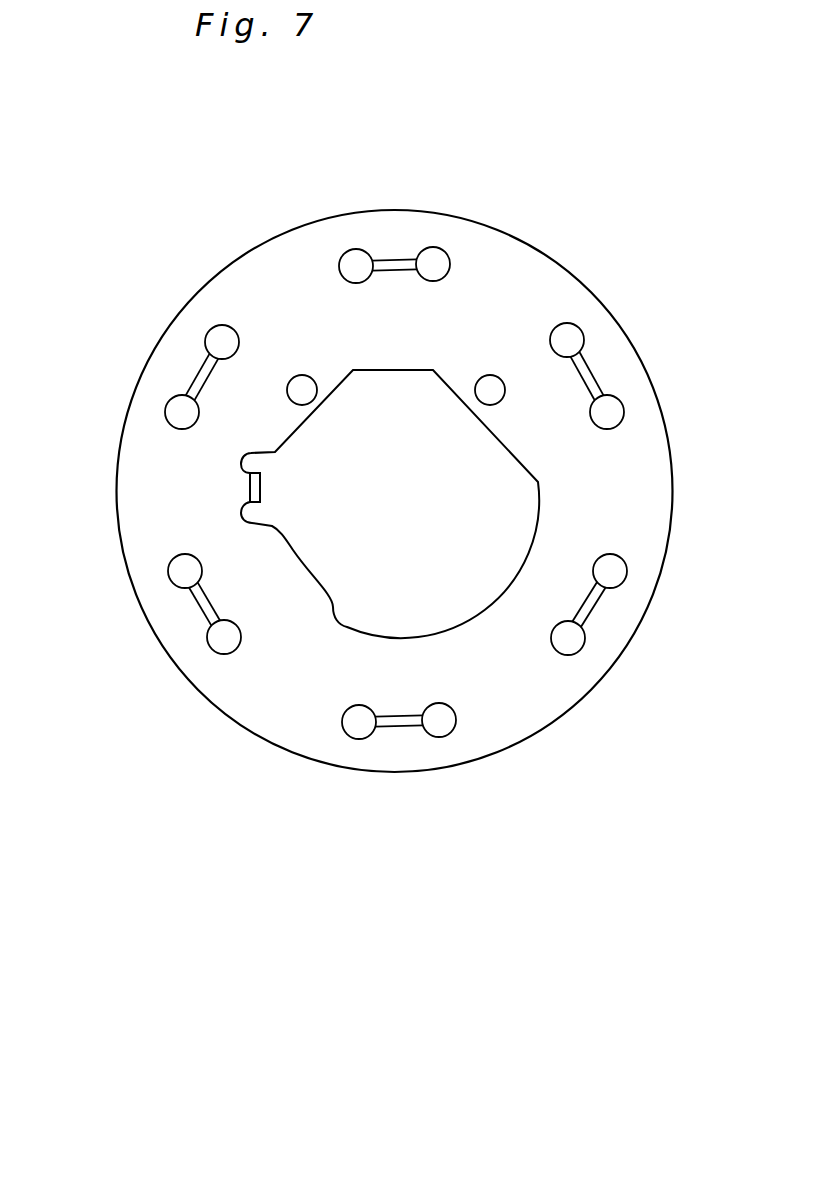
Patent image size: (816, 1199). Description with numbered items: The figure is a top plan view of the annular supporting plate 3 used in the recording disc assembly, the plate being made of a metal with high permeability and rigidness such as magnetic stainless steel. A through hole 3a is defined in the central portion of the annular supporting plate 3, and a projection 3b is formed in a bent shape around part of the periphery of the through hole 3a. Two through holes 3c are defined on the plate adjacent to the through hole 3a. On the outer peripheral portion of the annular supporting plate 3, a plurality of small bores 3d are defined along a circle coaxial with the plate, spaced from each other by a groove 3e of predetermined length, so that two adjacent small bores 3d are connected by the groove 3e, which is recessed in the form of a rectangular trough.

The annular supporting plate 3 is at (545, 272).
The through hole 3a is at (522, 505).
The projection 3b is at (262, 490).
The through holes 3c is at (305, 392).
The small bores 3d is at (217, 337).
The groove 3e is at (192, 375).